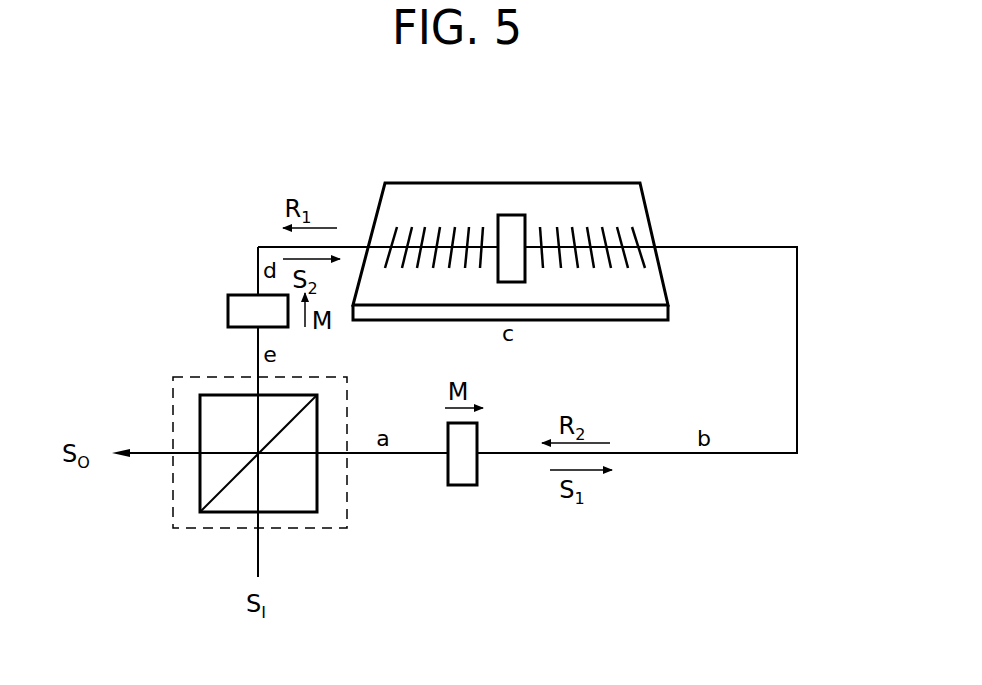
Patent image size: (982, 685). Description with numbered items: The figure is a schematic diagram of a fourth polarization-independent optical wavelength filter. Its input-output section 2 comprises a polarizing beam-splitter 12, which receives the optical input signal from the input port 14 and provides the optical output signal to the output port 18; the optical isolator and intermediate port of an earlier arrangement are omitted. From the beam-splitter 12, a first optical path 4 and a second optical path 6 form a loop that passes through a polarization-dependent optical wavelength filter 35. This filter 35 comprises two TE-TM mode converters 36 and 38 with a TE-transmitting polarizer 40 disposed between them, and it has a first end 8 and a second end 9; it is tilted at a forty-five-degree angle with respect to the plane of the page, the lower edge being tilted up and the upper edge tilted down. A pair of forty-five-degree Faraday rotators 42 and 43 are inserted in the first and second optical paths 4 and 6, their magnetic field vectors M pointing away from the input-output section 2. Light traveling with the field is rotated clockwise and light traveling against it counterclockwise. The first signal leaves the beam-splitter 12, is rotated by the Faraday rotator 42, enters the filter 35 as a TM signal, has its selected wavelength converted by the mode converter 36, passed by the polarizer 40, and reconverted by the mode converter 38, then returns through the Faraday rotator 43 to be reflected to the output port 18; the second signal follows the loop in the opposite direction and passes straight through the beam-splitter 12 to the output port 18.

The input-output section 2 is at (172, 522).
The first optical path 4 is at (798, 323).
The second optical path 6 is at (257, 272).
The first end 8 is at (514, 246).
The second end 9 is at (373, 217).
The polarizing beam-splitter 12 is at (317, 411).
The input port 14 is at (260, 558).
The output port 18 is at (157, 450).
The polarization-dependent optical wavelength filter 35 is at (582, 313).
The TE-TM mode converter 36 is at (597, 217).
The TE-TM mode converter 38 is at (433, 217).
The TE-transmitting polarizer 40 is at (513, 213).
The Faraday rotator 42 is at (463, 487).
The Faraday rotator 43 is at (228, 312).